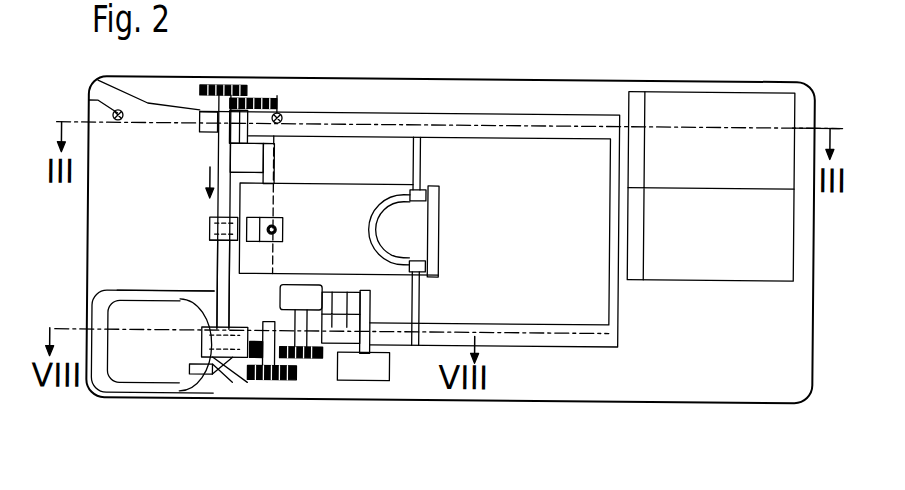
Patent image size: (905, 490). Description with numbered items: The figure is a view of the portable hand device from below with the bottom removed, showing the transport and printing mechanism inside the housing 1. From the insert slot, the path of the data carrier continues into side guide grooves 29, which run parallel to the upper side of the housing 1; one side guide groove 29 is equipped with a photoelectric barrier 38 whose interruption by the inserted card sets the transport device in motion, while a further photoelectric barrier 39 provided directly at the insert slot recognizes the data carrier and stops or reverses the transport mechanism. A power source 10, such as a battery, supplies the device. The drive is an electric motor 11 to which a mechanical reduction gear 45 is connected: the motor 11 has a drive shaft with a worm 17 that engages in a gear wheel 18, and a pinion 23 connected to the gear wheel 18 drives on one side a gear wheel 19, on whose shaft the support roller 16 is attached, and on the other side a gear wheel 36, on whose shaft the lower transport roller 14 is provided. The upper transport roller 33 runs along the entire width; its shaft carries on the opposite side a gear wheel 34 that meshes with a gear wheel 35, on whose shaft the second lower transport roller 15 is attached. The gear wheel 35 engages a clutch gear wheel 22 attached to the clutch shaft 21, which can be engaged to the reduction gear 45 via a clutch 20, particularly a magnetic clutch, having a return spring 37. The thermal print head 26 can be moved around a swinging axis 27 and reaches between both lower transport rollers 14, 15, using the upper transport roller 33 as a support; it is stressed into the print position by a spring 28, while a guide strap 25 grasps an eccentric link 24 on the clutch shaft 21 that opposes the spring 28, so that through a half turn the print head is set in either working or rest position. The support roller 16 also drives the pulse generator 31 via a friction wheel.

The housing 1 is at (508, 383).
The power source 10 is at (718, 132).
The electric motor 11 is at (130, 363).
The lower transport roller 14 is at (119, 290).
The second lower transport roller 15 is at (280, 128).
The support roller 16 is at (345, 348).
The worm 17 is at (266, 378).
The gear wheel 18 is at (286, 378).
The gear wheel 19 is at (302, 356).
The clutch 20 is at (246, 384).
The clutch shaft 21 is at (224, 249).
The clutch gear wheel 22 is at (221, 84).
The pinion 23 is at (275, 325).
The eccentric link 24 is at (212, 222).
The guide strap 25 is at (213, 236).
The thermal print head 26 is at (375, 260).
The swinging axis 27 is at (436, 183).
The spring 28 is at (376, 178).
The side guide grooves 29 is at (490, 118).
The pulse generator 31 is at (388, 374).
The upper transport roller 33 is at (273, 156).
The gear wheel 34 is at (277, 93).
The gear wheel 35 is at (265, 94).
The gear wheel 36 is at (253, 379).
The return spring 37 is at (216, 378).
The photoelectric barrier 38 is at (89, 100).
The photoelectric barrier 39 is at (98, 80).
The mechanical reduction gear 45 is at (272, 392).